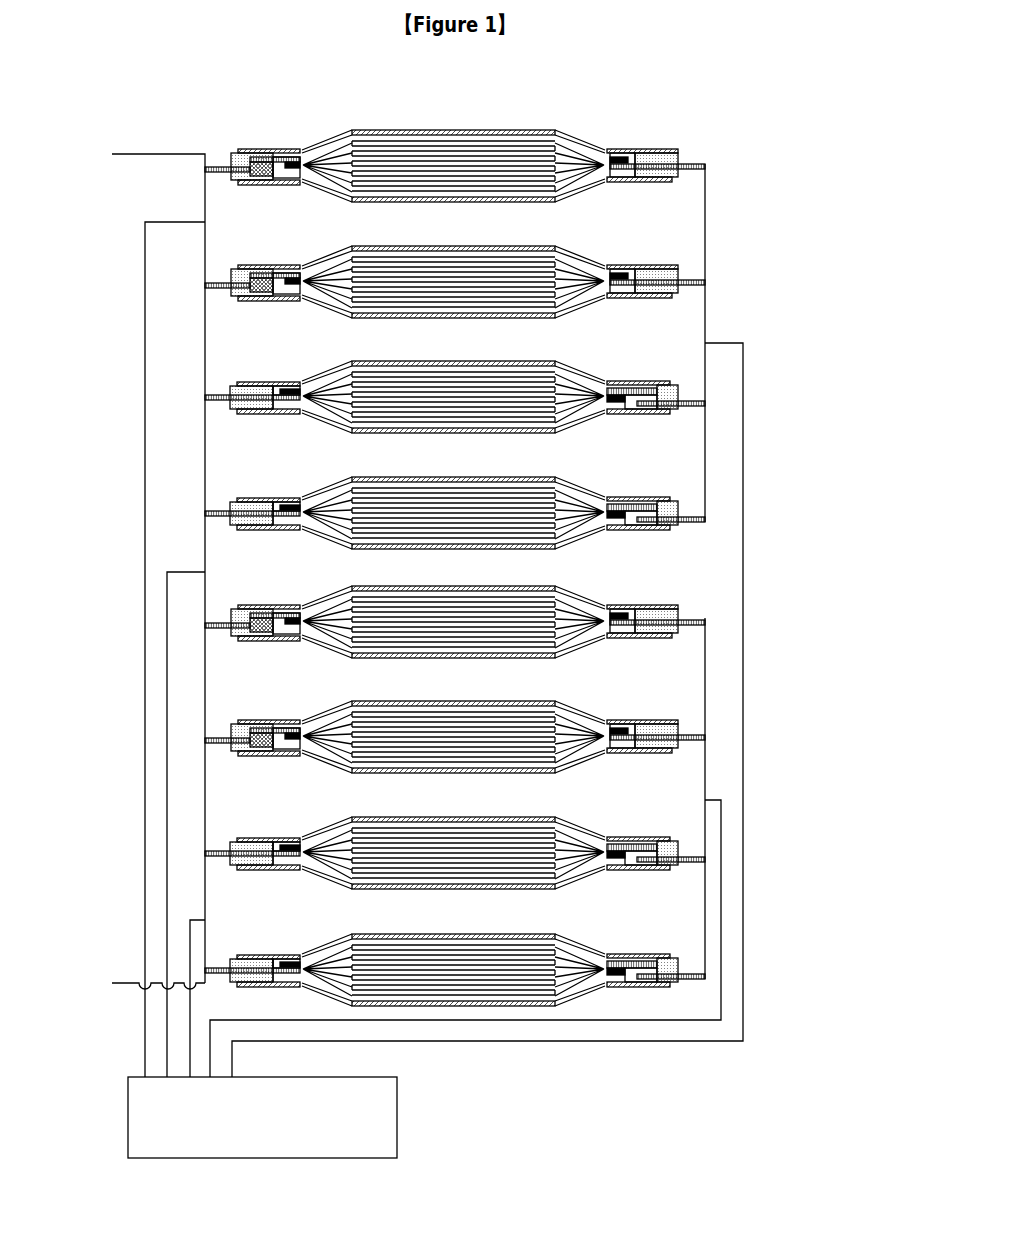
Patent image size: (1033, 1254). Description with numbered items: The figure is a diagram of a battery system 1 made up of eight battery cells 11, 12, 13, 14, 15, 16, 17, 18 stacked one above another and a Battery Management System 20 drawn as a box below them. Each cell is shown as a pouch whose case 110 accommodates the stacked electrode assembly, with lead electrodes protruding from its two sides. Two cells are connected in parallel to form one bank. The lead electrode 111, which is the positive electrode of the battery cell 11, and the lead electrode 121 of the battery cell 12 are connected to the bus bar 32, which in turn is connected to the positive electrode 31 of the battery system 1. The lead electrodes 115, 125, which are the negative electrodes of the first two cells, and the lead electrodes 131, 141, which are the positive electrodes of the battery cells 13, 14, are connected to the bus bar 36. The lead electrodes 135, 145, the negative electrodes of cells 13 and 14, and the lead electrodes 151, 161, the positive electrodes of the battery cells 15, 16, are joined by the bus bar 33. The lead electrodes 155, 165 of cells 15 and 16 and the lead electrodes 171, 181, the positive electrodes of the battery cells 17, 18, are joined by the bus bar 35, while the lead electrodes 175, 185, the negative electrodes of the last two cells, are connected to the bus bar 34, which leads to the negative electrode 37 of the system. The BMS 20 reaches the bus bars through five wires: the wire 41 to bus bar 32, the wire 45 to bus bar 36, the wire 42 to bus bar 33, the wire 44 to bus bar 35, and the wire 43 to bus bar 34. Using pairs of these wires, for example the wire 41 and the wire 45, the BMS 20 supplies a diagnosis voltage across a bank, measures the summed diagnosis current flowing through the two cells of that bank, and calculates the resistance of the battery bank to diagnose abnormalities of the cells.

The battery system 1 is at (746, 119).
The battery cell 11 is at (466, 144).
The battery cell 12 is at (455, 272).
The battery cell 13 is at (455, 377).
The battery cell 14 is at (455, 500).
The battery cell 15 is at (455, 612).
The battery cell 16 is at (455, 717).
The battery cell 17 is at (455, 833).
The battery cell 18 is at (455, 950).
The case 110 is at (458, 129).
The lead electrode 111 is at (216, 166).
The lead electrode 115 is at (699, 163).
The lead electrode 121 is at (213, 290).
The lead electrode 125 is at (697, 280).
The lead electrode 131 is at (697, 401).
The lead electrode 135 is at (213, 394).
The lead electrode 141 is at (697, 518).
The lead electrode 145 is at (213, 517).
The lead electrode 151 is at (213, 629).
The lead electrode 155 is at (697, 621).
The lead electrode 161 is at (213, 738).
The lead electrode 165 is at (697, 736).
The lead electrode 171 is at (697, 857).
The lead electrode 175 is at (218, 850).
The lead electrode 181 is at (697, 974).
The lead electrode 185 is at (218, 967).
The Battery Management System 20 is at (397, 1118).
The positive electrode 31 is at (155, 153).
The bus bar 32 is at (205, 234).
The bus bar 33 is at (205, 450).
The bus bar 34 is at (205, 897).
The bus bar 35 is at (705, 660).
The bus bar 36 is at (705, 205).
The negative electrode 37 is at (122, 982).
The wire 41 is at (170, 221).
The wire 42 is at (175, 571).
The wire 43 is at (190, 918).
The wire 44 is at (718, 799).
The wire 45 is at (725, 342).